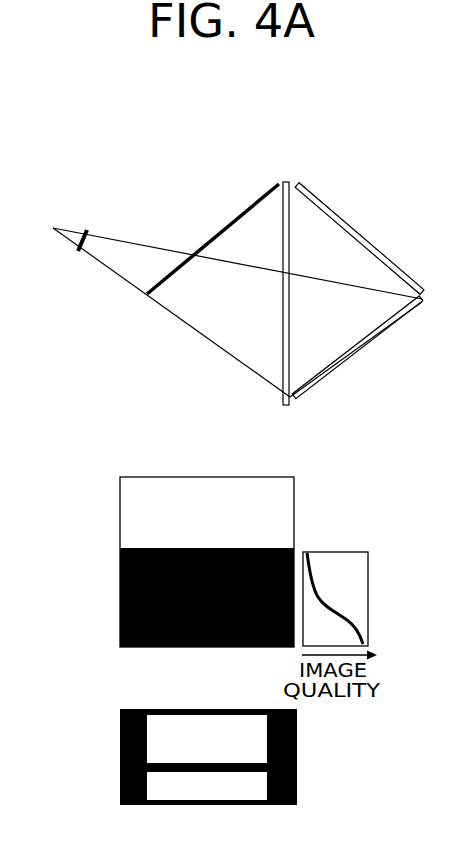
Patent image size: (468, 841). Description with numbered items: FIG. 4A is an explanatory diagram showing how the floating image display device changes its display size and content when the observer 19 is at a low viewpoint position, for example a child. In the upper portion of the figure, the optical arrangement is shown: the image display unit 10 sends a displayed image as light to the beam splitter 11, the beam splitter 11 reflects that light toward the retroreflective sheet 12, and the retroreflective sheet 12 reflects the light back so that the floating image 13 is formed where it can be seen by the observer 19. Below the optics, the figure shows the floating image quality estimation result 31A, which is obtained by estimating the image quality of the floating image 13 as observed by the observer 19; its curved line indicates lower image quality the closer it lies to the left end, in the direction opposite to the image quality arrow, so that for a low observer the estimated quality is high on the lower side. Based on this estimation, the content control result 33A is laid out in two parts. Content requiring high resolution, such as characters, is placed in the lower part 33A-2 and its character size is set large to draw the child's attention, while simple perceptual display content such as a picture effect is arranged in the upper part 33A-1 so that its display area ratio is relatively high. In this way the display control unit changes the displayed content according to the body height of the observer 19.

The observer 19 is at (83, 231).
The floating image 13 is at (172, 275).
The beam splitter 11 is at (285, 378).
The image display unit 10 is at (384, 250).
The retroreflective sheet 12 is at (387, 339).
The floating image quality estimation result 31A is at (120, 610).
The content control result 33A is at (181, 757).
The upper part 33A-1 is at (207, 739).
The lower part 33A-2 is at (207, 786).